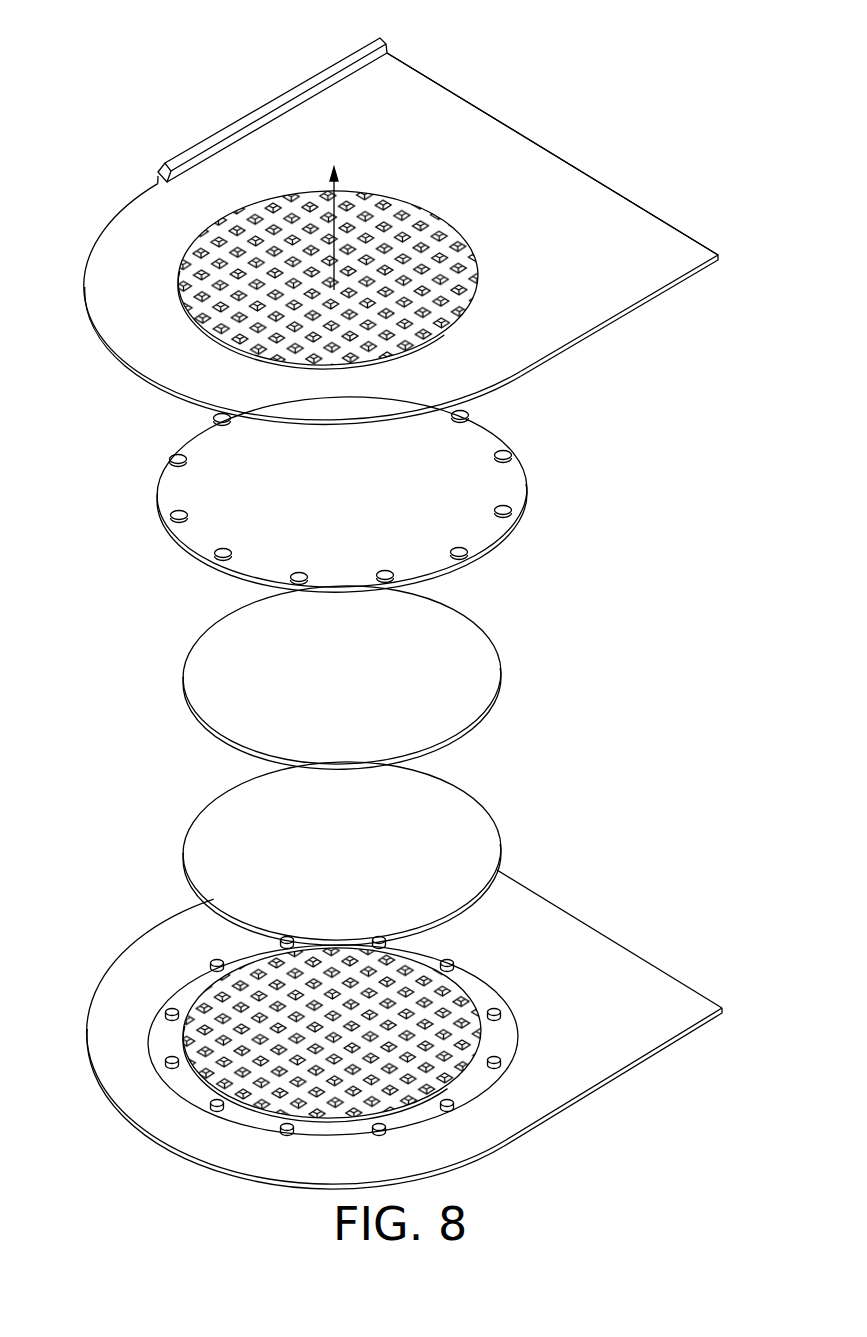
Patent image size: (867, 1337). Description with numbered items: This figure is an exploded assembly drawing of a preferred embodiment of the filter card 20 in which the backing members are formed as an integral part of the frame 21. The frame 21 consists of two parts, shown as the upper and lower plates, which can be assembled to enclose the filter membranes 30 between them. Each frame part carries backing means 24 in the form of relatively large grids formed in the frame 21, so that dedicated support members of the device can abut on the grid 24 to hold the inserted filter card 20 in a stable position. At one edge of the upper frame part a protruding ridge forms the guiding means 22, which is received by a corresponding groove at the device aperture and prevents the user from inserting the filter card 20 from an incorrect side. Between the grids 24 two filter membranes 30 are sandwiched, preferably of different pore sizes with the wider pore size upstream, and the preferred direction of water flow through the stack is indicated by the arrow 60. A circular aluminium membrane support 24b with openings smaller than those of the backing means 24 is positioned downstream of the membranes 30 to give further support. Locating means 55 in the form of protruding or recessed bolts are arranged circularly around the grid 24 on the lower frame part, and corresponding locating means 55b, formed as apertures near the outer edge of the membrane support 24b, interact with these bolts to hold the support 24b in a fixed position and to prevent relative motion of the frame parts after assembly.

The filter card 20 is at (650, 210).
The frame 21 is at (532, 150).
The guiding means 22 is at (342, 62).
The backing means 24 is at (213, 257).
The membrane support 24b is at (332, 492).
The filter membrane 30 is at (202, 647).
The locating means 55 is at (452, 1105).
The locating means 55b is at (505, 456).
The arrow 60 is at (337, 185).